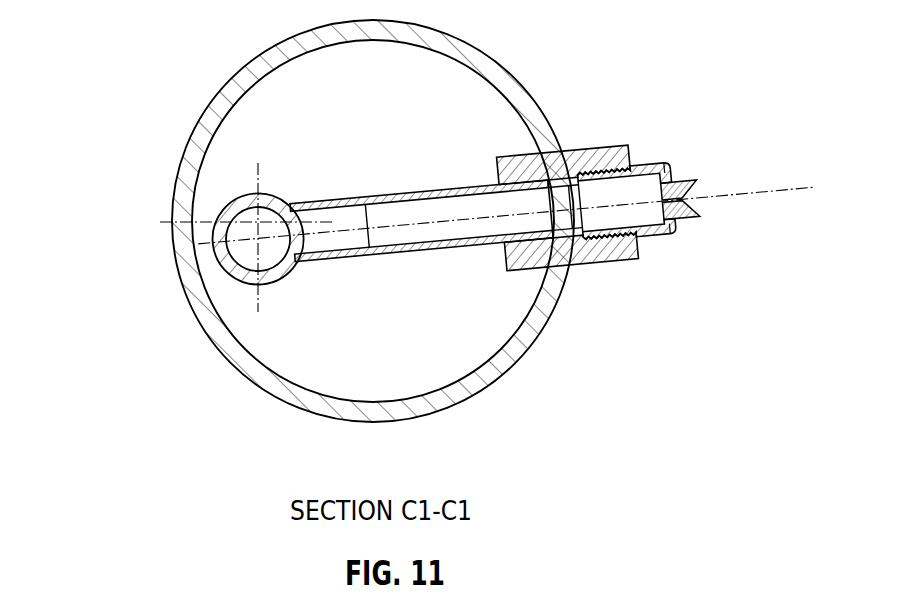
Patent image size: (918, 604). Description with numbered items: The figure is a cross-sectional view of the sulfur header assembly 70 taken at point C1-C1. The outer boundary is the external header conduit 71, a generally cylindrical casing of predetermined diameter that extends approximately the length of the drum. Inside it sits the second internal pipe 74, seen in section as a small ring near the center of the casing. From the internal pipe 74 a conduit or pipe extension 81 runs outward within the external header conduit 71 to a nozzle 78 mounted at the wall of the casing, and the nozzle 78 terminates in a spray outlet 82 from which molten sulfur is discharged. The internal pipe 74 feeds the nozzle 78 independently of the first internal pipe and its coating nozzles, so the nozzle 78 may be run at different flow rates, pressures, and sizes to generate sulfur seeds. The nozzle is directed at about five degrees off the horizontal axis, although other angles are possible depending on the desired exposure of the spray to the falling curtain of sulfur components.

The sulfur header assembly 70 is at (90, 140).
The external header conduit 71 is at (442, 410).
The second internal pipe 74 is at (242, 282).
The nozzle 78 is at (677, 98).
The pipe extension 81 is at (345, 258).
The spray outlet 82 is at (690, 222).